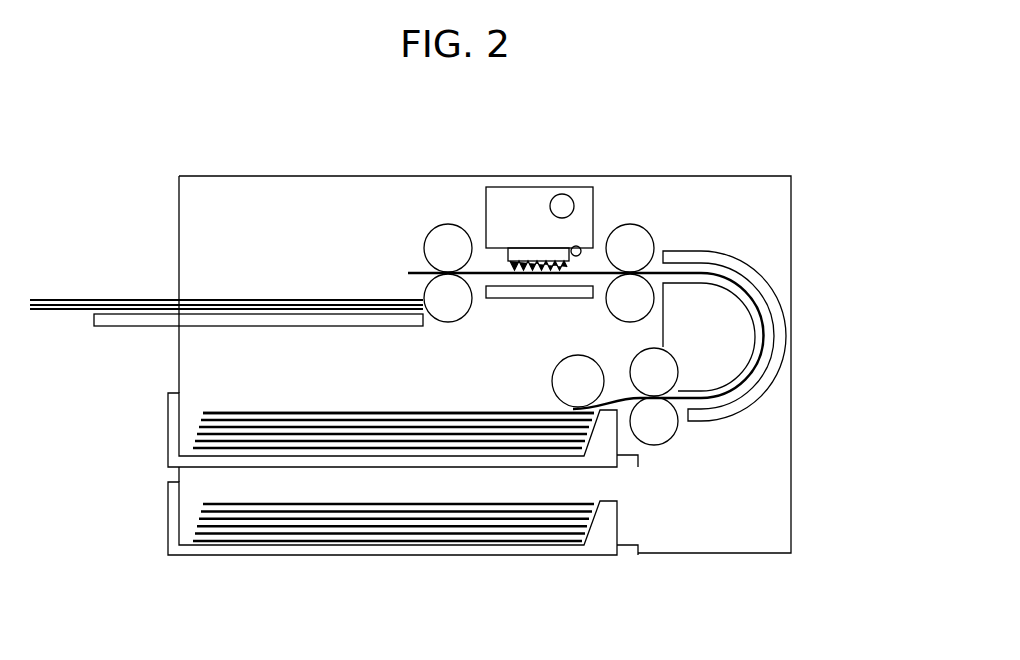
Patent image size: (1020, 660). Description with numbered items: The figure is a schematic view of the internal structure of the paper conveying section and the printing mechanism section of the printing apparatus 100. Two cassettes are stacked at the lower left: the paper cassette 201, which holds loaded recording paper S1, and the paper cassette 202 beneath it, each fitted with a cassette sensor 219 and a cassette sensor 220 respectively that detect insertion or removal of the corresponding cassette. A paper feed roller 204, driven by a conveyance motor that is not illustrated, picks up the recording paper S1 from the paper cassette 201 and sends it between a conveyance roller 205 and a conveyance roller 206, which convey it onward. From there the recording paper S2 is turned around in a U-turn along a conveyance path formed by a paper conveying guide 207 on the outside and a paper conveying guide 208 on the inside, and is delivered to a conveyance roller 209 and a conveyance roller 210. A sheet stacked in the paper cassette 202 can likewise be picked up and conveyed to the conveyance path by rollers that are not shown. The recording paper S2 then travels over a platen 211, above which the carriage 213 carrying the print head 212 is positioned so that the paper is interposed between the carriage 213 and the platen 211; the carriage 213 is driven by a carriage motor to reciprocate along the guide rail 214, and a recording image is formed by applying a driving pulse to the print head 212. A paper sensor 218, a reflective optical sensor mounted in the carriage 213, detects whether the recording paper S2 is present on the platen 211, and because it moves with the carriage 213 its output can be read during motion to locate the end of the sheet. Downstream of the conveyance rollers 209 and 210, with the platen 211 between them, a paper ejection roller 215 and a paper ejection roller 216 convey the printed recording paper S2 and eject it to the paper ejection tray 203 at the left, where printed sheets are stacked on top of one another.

The printing apparatus 100 is at (712, 176).
The paper cassette 201 is at (168, 440).
The paper cassette 202 is at (168, 540).
The paper ejection tray 203 is at (112, 327).
The paper feed roller 204 is at (563, 381).
The conveyance roller 205 is at (667, 425).
The conveyance roller 206 is at (663, 367).
The paper conveying guide 207 is at (777, 350).
The paper conveying guide 208 is at (745, 320).
The conveyance roller 209 is at (620, 303).
The conveyance roller 210 is at (642, 240).
The platen 211 is at (520, 300).
The print head 212 is at (518, 252).
The carriage 213 is at (514, 194).
The guide rail 214 is at (560, 194).
The paper ejection roller 215 is at (450, 313).
The paper ejection roller 216 is at (440, 245).
The paper sensor 218 is at (580, 247).
The cassette sensor 219 is at (630, 462).
The cassette sensor 220 is at (627, 556).
The recording paper S1 is at (332, 412).
The recording paper S2 is at (758, 362).